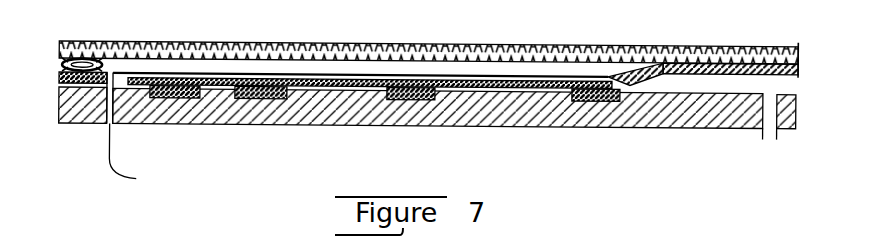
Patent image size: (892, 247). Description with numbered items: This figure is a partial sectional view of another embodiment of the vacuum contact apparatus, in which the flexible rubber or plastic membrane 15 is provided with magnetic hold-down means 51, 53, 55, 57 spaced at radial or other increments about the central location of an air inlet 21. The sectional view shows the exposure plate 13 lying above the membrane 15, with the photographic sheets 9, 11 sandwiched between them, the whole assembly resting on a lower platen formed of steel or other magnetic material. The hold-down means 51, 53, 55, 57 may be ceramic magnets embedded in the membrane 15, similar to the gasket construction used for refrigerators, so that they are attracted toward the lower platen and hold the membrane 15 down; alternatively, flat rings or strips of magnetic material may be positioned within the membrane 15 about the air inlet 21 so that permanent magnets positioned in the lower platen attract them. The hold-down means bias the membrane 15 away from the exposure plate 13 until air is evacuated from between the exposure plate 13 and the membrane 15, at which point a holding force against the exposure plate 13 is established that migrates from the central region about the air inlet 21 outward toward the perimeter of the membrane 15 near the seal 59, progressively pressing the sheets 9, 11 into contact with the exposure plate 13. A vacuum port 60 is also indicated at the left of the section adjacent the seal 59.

The sheet 9 is at (513, 72).
The sheet 11 is at (360, 45).
The exposure plate 13 is at (187, 41).
The membrane 15 is at (735, 58).
The air inlet 21 is at (777, 134).
The magnetic hold-down means 51 is at (597, 97).
The magnetic hold-down means 53 is at (403, 97).
The magnetic hold-down means 55 is at (262, 97).
The magnetic hold-down means 57 is at (172, 97).
The seal 59 is at (82, 41).
The vacuum port 60 is at (110, 152).